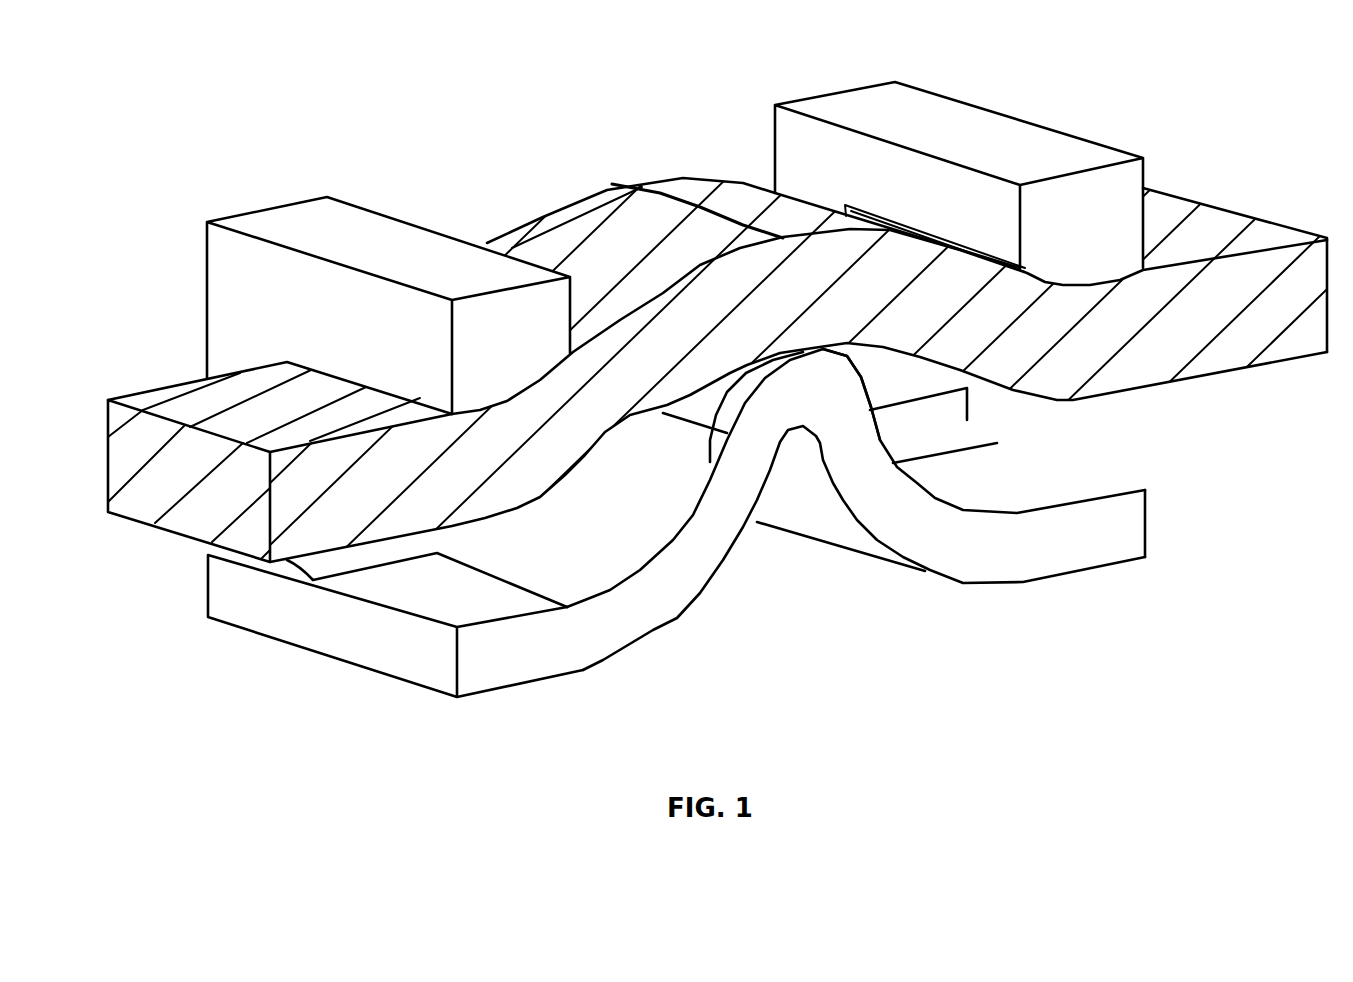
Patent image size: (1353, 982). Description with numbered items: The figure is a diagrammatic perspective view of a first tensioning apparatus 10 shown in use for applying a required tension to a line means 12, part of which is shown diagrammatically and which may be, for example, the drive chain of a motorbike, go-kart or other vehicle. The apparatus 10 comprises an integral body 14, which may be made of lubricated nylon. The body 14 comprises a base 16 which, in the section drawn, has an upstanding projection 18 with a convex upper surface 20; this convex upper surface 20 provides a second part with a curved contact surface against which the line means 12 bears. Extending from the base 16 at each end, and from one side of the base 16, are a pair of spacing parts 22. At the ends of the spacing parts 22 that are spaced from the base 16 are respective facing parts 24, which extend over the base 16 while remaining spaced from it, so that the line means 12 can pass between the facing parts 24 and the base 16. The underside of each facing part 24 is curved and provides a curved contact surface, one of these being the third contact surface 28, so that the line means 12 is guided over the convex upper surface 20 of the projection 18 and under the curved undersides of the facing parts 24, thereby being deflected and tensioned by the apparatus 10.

The tensioning apparatus 10 is at (388, 708).
The line means 12 is at (180, 497).
The integral body 14 is at (652, 607).
The base 16 is at (507, 657).
The upstanding projection 18 is at (815, 384).
The convex upper surface 20 is at (710, 462).
The spacing parts 22 is at (225, 362).
The facing parts 24 is at (415, 257).
The third contact surface 28 is at (1030, 275).